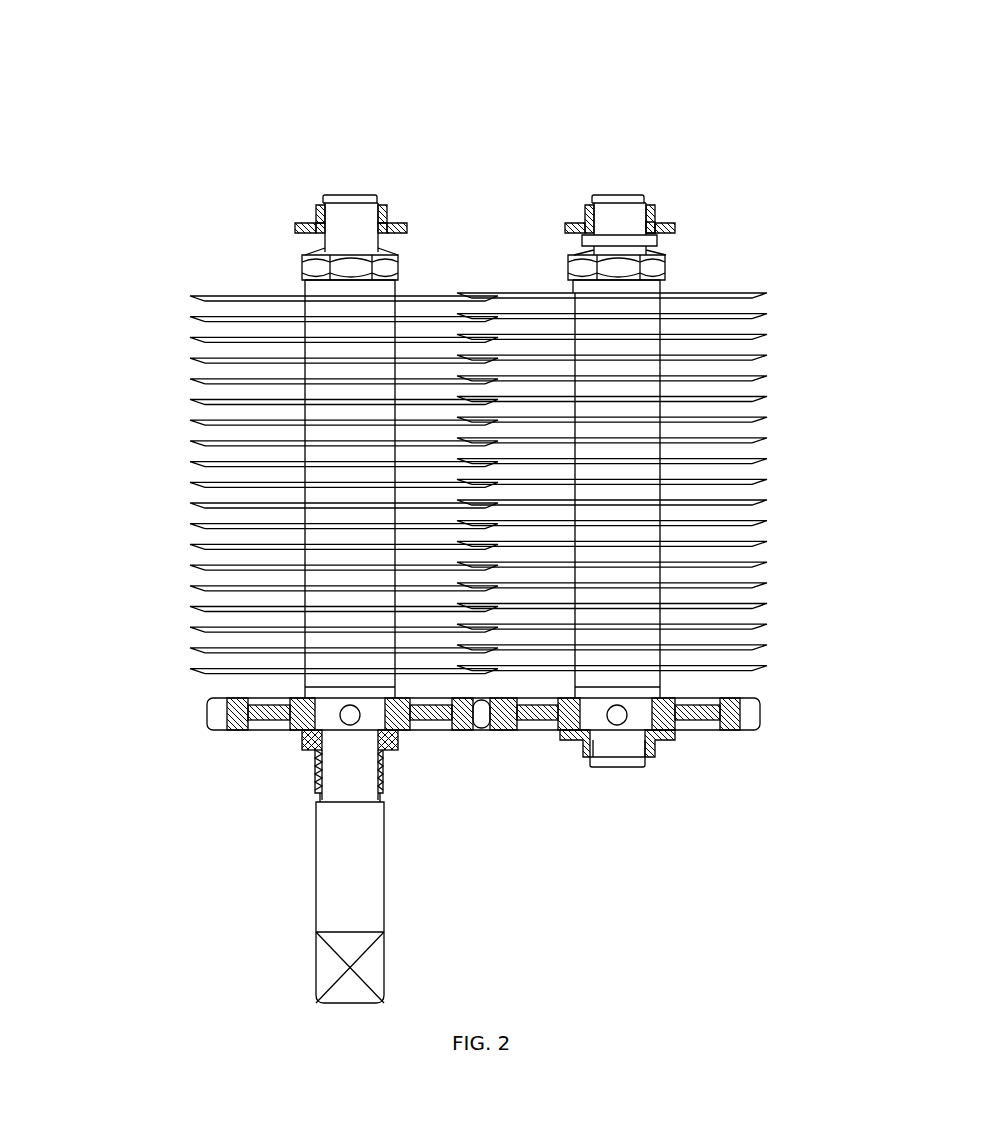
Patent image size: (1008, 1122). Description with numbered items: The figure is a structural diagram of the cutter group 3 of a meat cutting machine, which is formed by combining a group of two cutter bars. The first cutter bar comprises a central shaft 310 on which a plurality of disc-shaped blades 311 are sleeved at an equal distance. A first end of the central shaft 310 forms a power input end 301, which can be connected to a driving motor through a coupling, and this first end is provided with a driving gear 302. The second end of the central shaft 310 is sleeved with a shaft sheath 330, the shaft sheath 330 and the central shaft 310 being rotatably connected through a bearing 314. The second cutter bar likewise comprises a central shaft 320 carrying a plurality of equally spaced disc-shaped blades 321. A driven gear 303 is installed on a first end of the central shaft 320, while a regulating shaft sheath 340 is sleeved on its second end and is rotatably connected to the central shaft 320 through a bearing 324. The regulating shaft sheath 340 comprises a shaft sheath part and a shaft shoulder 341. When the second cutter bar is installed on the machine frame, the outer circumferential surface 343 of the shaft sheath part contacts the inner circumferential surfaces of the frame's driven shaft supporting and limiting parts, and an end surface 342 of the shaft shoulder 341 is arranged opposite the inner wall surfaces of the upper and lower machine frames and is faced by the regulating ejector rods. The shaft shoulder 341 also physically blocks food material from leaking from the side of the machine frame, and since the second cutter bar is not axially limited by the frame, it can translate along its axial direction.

The cutter group 3 is at (303, 82).
The power input end 301 is at (315, 866).
The driving gear 302 is at (227, 730).
The driven gear 303 is at (700, 732).
The central shaft 310 is at (305, 285).
The blades 311 is at (190, 296).
The bearing 314 is at (363, 218).
The central shaft 320 is at (668, 288).
The blades 321 is at (770, 293).
The bearing 324 is at (613, 218).
The shaft sheath 330 is at (318, 203).
The regulating shaft sheath 340 is at (655, 202).
The shaft shoulder 341 is at (675, 228).
The end surface 342 is at (663, 225).
The outer circumferential surface 343 is at (585, 215).